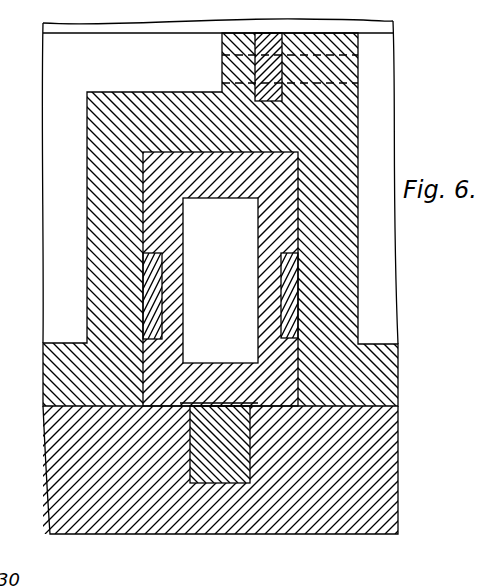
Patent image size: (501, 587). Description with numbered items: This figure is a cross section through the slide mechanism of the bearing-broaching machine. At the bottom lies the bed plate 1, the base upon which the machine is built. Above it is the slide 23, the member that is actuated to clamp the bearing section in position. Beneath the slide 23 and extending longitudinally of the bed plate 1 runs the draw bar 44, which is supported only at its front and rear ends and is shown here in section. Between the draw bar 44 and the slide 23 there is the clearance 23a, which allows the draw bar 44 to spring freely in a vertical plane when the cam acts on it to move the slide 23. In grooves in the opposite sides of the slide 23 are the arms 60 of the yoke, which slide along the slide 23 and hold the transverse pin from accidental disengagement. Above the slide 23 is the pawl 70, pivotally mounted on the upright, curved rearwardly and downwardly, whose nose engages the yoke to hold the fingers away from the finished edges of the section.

The bed plate 1 is at (43, 477).
The slide 23 is at (297, 235).
The clearance 23a is at (210, 403).
The draw bar 44 is at (213, 483).
The arms 60 is at (298, 292).
The pawl 70 is at (260, 67).